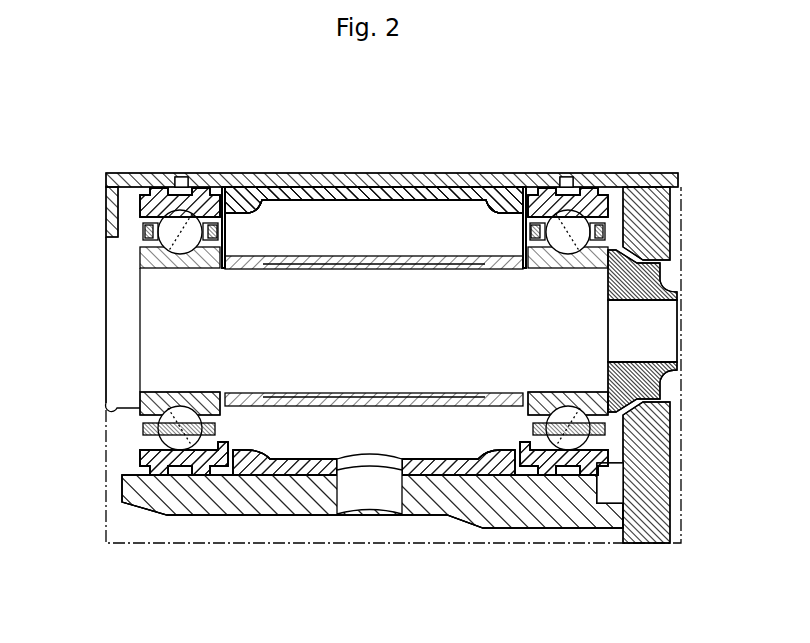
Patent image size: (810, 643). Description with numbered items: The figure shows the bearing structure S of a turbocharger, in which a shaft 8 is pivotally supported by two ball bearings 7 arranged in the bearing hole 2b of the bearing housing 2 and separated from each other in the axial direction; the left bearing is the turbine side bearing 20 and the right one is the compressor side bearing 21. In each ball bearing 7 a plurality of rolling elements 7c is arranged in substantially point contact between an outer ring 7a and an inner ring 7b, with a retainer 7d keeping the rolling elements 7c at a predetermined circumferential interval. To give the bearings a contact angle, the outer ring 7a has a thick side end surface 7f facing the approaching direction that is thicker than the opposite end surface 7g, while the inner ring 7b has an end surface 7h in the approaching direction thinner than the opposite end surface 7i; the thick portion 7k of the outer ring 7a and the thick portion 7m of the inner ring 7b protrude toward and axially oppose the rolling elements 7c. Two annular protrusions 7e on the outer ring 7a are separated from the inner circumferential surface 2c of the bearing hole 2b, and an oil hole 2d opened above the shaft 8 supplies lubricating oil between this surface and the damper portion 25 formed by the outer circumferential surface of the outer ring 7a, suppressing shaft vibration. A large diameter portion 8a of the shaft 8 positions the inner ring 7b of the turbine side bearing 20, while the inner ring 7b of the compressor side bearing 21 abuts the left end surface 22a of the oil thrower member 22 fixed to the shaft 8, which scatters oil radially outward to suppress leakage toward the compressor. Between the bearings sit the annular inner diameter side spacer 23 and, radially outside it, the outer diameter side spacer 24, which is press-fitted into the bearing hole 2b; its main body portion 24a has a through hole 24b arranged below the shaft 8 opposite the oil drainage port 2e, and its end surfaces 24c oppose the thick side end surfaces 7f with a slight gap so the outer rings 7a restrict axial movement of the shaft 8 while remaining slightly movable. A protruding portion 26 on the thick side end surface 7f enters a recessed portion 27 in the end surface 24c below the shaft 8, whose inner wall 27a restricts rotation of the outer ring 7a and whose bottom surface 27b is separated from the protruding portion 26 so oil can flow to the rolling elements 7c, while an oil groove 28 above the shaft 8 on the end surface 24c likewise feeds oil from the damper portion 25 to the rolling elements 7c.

The bearing structure S is at (138, 53).
The bearing housing 2 is at (478, 186).
The bearing hole 2b is at (133, 470).
The inner circumferential surface 2c is at (372, 495).
The oil hole 2d is at (572, 184).
The oil drainage port 2e is at (396, 515).
The ball bearing 7 is at (241, 247).
The turbine side bearing 20 is at (374, 227).
The compressor side bearing 21 is at (374, 227).
The outer ring 7a is at (606, 203).
The thick side end surface 7f is at (374, 227).
The end surface 7g is at (374, 227).
The inner ring 7b is at (526, 440).
The end surface 7h is at (374, 403).
The rolling elements 7c is at (612, 213).
The retainer 7d is at (606, 243).
The thick portion 7m is at (655, 283).
The thick portion 7k is at (660, 388).
The end surface 7i is at (612, 412).
The annular protrusion 7e is at (578, 472).
The shaft 8 is at (368, 341).
The large diameter portion 8a is at (108, 404).
The oil thrower member 22 is at (682, 383).
The left end surface 22a is at (610, 288).
The inner diameter side spacer 23 is at (362, 407).
The outer diameter side spacer 24 is at (443, 455).
The main body portion 24a is at (374, 462).
The through hole 24b is at (327, 462).
The end surface 24c is at (536, 187).
The damper portion 25 is at (595, 197).
The protruding portion 26 is at (500, 462).
The recessed portion 27 is at (553, 467).
The inner wall 27a is at (374, 458).
The bottom surface 27b is at (527, 462).
The oil groove 28 is at (530, 190).